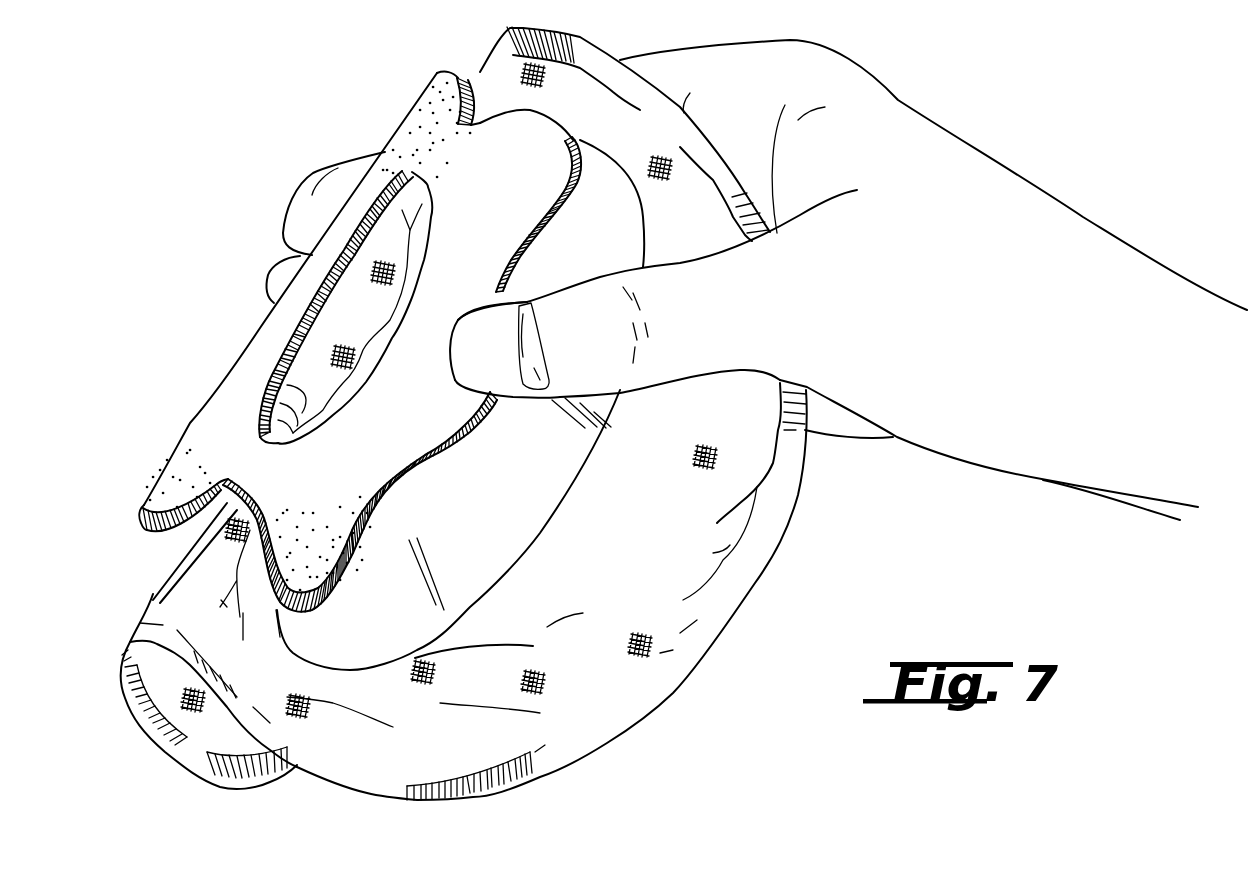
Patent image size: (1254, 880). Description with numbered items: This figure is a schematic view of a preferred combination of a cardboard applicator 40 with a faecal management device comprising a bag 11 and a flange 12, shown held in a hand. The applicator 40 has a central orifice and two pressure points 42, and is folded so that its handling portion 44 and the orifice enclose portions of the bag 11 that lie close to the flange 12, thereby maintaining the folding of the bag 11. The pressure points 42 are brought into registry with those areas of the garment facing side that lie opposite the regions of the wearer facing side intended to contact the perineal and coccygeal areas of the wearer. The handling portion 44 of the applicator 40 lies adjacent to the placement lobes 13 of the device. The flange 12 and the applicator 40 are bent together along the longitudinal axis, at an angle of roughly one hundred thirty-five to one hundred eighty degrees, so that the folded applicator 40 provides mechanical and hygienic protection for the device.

The bag 11 is at (657, 570).
The flange 12 is at (340, 500).
The placement lobes 13 is at (472, 423).
The applicator 40 is at (463, 559).
The pressure points 42 is at (222, 488).
The handling portion 44 is at (569, 479).